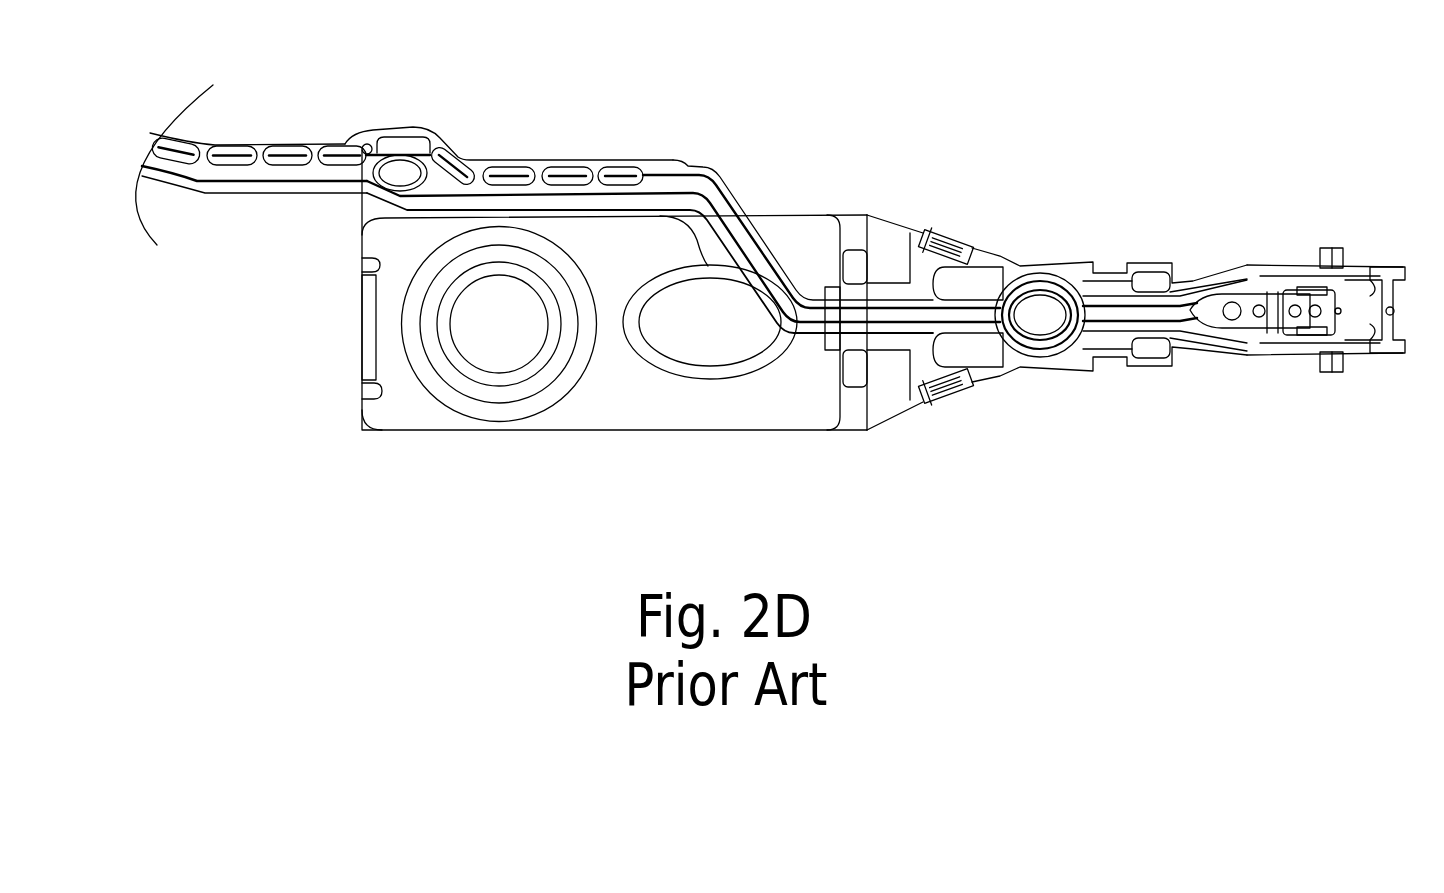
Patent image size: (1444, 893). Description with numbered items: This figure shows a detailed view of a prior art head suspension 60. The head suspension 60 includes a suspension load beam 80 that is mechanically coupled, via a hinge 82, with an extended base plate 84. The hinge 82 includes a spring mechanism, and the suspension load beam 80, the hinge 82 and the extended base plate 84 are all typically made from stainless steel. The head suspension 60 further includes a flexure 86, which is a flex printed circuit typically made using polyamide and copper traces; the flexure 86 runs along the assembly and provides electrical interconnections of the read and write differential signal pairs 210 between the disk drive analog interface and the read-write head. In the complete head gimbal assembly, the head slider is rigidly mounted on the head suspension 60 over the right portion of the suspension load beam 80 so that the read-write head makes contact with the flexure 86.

The head suspension 60 is at (1408, 79).
The suspension load beam 80 is at (1407, 195).
The hinge 82 is at (850, 427).
The extended base plate 84 is at (563, 432).
The flexure 86 is at (263, 138).
The read and write differential signal pairs 210 is at (690, 187).